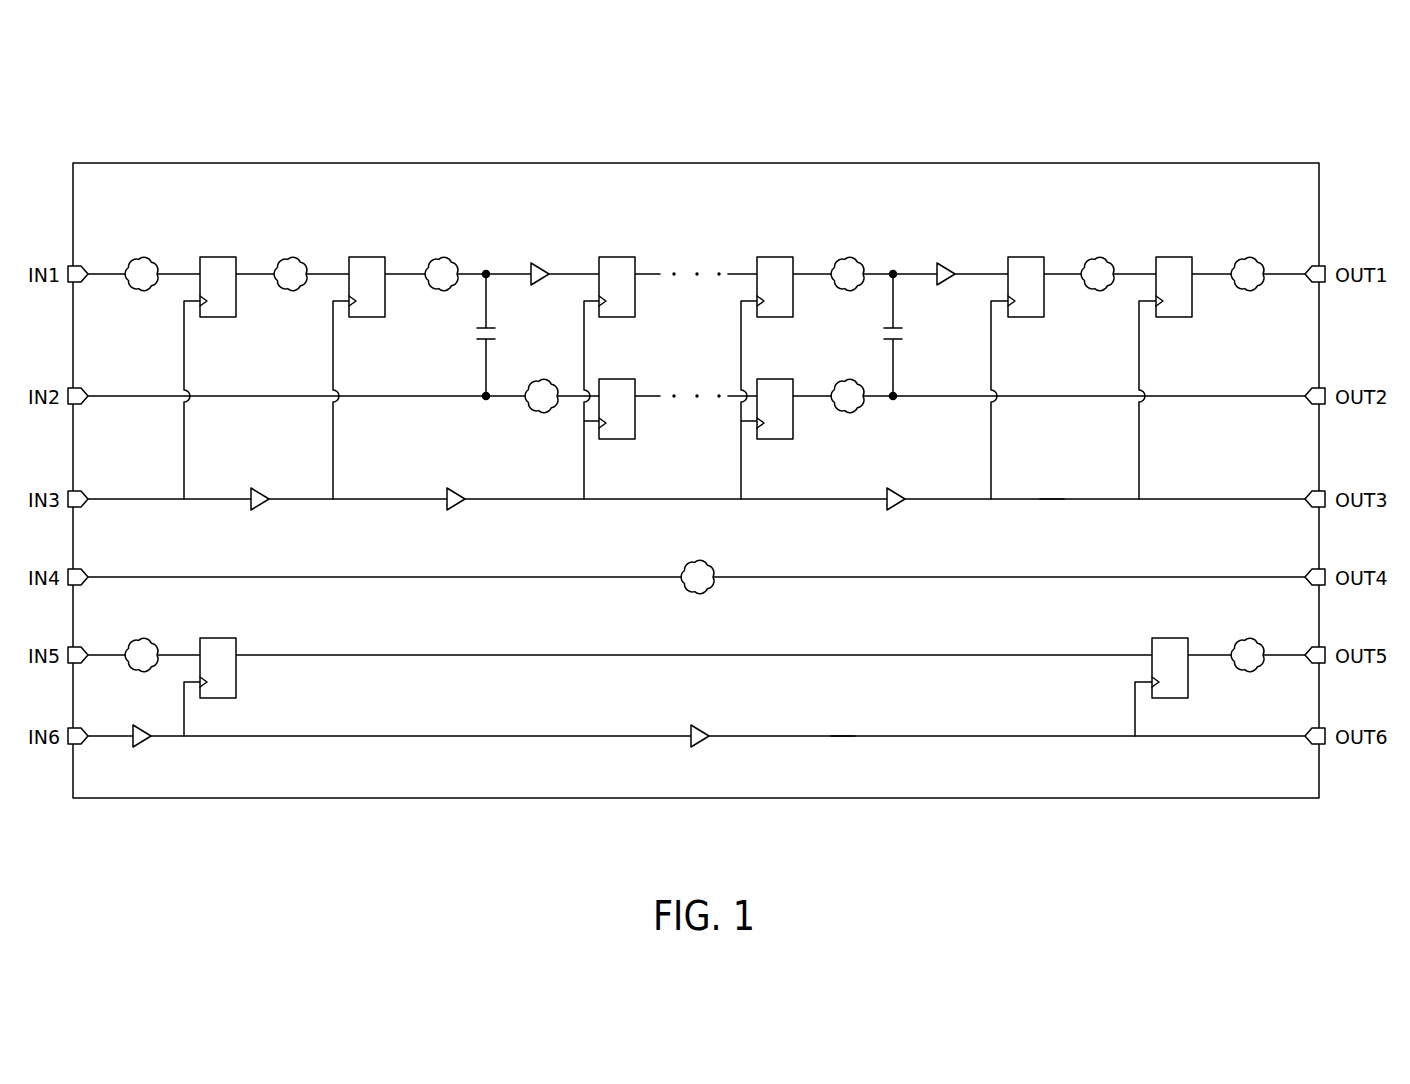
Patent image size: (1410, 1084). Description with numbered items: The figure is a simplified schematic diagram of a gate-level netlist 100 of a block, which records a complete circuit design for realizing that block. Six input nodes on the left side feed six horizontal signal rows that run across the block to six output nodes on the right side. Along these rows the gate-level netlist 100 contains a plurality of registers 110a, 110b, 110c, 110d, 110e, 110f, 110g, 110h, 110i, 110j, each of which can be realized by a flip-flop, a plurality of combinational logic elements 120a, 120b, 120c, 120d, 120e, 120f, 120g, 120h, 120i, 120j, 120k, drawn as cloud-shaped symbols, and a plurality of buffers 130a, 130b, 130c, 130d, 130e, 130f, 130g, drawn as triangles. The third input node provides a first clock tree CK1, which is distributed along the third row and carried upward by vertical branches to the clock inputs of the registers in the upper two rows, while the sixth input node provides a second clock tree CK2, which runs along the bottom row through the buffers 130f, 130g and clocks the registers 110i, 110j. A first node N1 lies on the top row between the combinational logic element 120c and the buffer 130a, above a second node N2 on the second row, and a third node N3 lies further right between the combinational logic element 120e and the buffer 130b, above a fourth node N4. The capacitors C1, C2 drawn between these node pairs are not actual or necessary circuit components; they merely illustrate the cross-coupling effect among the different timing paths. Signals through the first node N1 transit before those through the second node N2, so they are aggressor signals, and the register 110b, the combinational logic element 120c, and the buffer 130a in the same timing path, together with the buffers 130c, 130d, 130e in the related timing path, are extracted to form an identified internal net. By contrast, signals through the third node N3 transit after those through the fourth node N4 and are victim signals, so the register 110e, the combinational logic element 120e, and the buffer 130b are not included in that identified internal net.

The gate-level netlist 100 is at (86, 95).
The register 110a is at (221, 257).
The register 110b is at (370, 257).
The register 110c is at (616, 257).
The register 110d is at (624, 379).
The register 110e is at (776, 257).
The register 110f is at (1026, 257).
The register 110g is at (1176, 257).
The register 110h is at (782, 379).
The register 110i is at (236, 645).
The register 110j is at (1152, 645).
The combinational logic element 120a is at (141, 256).
The combinational logic element 120b is at (290, 256).
The combinational logic element 120c is at (440, 256).
The combinational logic element 120d is at (540, 414).
The combinational logic element 120e is at (846, 256).
The combinational logic element 120f is at (1096, 256).
The combinational logic element 120g is at (1246, 256).
The combinational logic element 120h is at (846, 414).
The combinational logic element 120i is at (705, 560).
The combinational logic element 120j is at (151, 639).
The combinational logic element 120k is at (1238, 641).
The buffer 130a is at (534, 263).
The buffer 130b is at (941, 263).
The buffer 130c is at (253, 488).
The buffer 130d is at (450, 488).
The buffer 130e is at (890, 488).
The buffer 130f is at (138, 746).
The buffer 130g is at (696, 746).
The capacitor C1 is at (477, 334).
The capacitor C2 is at (902, 336).
The first node N1 is at (496, 262).
The second node N2 is at (469, 385).
The third node N3 is at (902, 262).
The fourth node N4 is at (911, 385).
The first clock tree CK1 is at (1052, 500).
The second clock tree CK2 is at (843, 736).